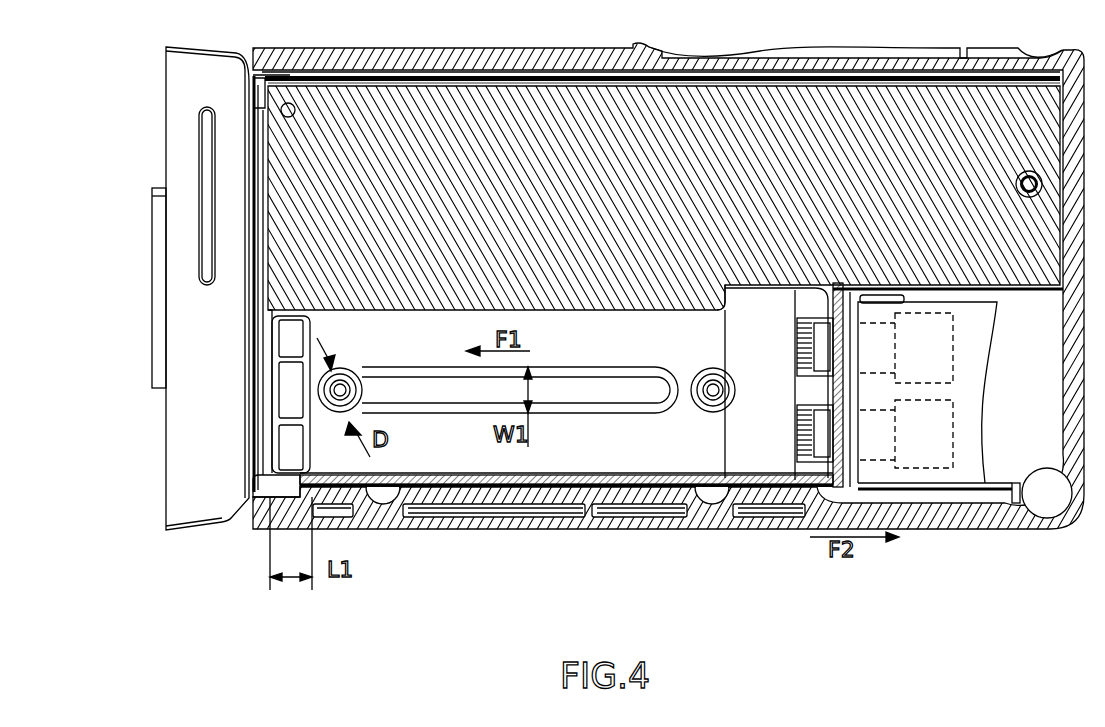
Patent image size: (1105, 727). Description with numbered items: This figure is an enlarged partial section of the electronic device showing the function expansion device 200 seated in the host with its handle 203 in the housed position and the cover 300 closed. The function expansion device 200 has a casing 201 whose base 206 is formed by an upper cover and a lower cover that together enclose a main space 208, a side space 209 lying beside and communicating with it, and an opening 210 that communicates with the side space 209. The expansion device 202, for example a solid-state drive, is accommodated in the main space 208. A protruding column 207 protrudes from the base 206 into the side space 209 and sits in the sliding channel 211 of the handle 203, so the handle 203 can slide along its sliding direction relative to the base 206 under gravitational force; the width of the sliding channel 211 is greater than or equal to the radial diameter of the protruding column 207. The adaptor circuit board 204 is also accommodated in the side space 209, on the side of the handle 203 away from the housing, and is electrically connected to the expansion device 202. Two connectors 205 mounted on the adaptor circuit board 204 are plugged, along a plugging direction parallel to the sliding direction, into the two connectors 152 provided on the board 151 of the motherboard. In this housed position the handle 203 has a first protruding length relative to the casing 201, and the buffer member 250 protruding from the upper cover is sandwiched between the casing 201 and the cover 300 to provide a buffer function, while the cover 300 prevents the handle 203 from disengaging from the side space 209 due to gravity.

The cover 300 is at (166, 77).
The buffer member 250 is at (265, 113).
The casing 201 is at (338, 76).
The main space 208 is at (468, 82).
The expansion device 202 is at (567, 105).
The function expansion device 200 is at (265, 437).
The connectors 205 is at (821, 320).
The protruding column 207 is at (364, 391).
The sliding channel 211 is at (470, 394).
The handle 203 is at (577, 443).
The adaptor circuit board 204 is at (768, 447).
The base 206 is at (718, 482).
The side space 209 is at (395, 473).
The opening 210 is at (256, 478).
The board 151 is at (974, 473).
The connectors 152 is at (929, 457).